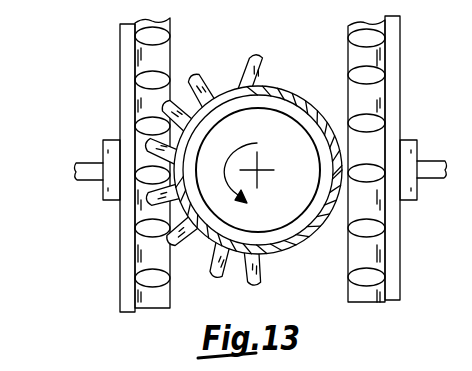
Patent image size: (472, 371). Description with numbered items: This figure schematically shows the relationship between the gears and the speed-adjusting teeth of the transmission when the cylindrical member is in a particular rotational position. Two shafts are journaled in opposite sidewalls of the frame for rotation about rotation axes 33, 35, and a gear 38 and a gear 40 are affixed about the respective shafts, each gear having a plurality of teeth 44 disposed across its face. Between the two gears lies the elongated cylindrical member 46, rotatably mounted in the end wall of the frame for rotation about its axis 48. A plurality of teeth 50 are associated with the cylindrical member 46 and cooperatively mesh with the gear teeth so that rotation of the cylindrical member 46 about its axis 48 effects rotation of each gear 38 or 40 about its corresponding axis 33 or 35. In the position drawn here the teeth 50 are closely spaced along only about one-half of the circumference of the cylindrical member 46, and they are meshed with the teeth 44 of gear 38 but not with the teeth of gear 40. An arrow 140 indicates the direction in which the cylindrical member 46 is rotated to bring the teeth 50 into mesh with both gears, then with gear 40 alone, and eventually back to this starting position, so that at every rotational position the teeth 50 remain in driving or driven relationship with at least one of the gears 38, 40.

The rotation axis 33 is at (43, 170).
The rotation axis 35 is at (452, 170).
The gear 38 is at (123, 233).
The gear 40 is at (392, 249).
The teeth 44 is at (148, 75).
The cylindrical member 46 is at (277, 98).
The rotation axis 48 is at (258, 171).
The teeth 50 is at (229, 58).
The arrow 140 is at (255, 161).